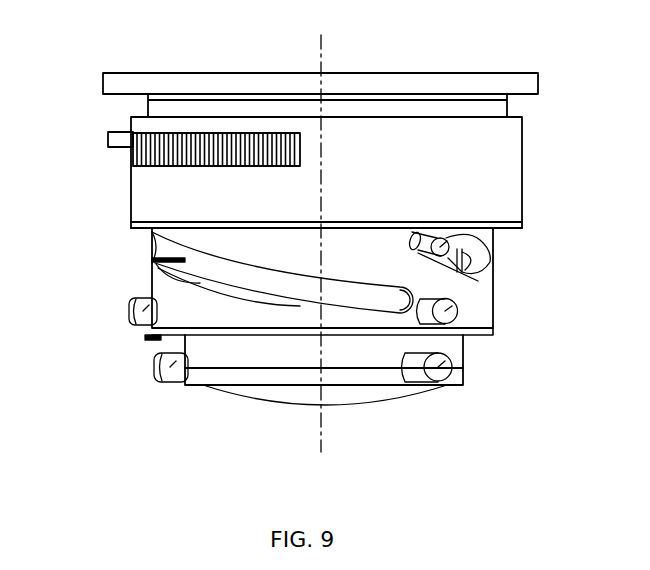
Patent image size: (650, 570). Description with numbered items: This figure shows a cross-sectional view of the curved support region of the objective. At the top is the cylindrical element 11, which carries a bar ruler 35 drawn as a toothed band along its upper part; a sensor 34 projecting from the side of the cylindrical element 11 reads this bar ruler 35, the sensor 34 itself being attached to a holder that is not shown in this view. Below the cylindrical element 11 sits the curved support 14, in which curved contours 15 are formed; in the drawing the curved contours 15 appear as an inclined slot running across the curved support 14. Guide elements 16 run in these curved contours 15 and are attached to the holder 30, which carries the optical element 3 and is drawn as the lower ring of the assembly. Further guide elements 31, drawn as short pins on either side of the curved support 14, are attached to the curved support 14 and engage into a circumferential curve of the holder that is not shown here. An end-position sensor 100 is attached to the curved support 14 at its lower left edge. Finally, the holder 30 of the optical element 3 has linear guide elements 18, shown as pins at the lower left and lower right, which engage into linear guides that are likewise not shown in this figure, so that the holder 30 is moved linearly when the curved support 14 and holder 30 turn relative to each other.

The optical element 3 is at (418, 405).
The cylindrical element 11 is at (480, 166).
The curved support 14 is at (473, 300).
The curved contours 15 is at (262, 272).
The guide elements 16 is at (170, 250).
The linear guide elements 18 is at (170, 382).
The holder 30 is at (372, 355).
The guide elements 31 is at (142, 310).
The sensor 34 is at (112, 140).
The bar ruler 35 is at (228, 147).
The end-position sensor 100 is at (150, 340).